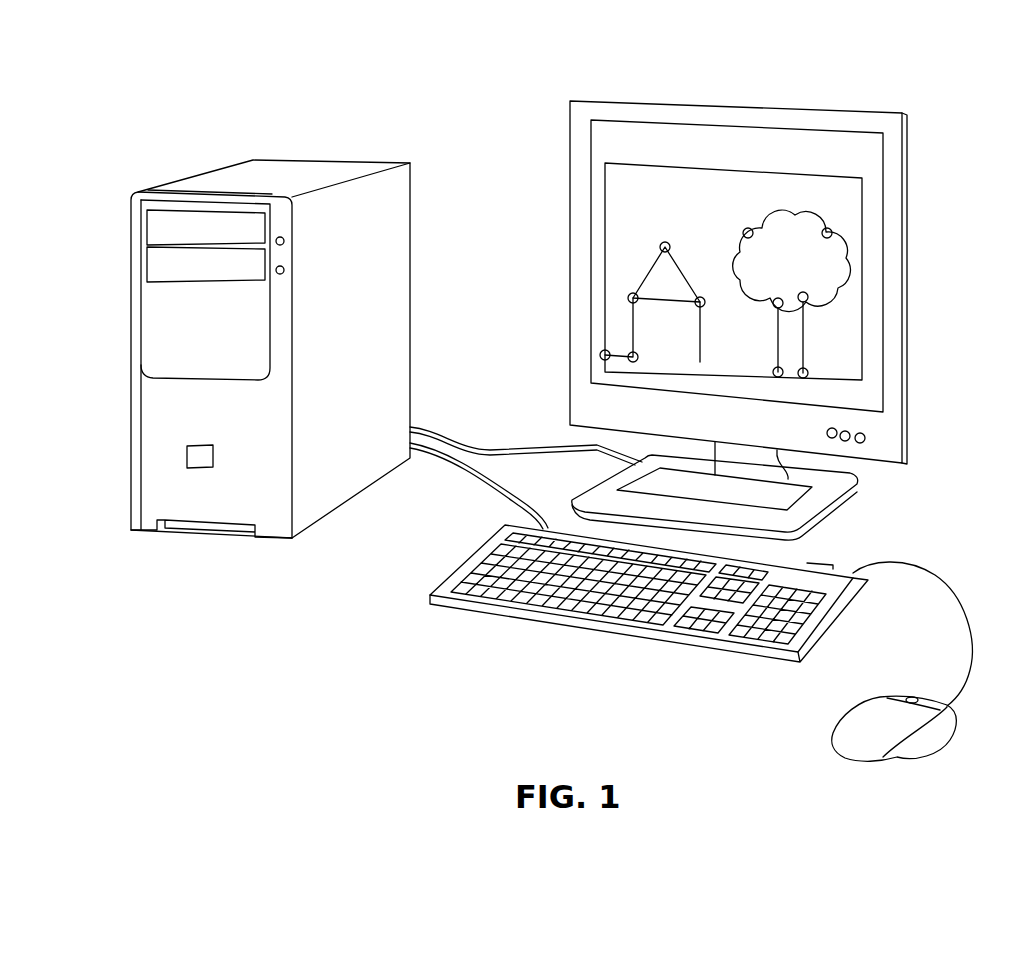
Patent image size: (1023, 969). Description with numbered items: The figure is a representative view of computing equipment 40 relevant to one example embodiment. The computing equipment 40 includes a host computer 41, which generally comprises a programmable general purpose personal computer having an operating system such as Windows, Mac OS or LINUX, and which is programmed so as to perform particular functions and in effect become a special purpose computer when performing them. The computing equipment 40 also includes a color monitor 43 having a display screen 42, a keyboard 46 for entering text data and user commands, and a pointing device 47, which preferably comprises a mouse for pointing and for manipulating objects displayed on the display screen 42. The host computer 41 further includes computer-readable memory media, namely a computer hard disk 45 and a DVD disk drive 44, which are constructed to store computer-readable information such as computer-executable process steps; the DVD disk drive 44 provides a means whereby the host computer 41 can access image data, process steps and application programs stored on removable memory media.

The computing equipment 40 is at (912, 79).
The host computer 41 is at (330, 162).
The display screen 42 is at (848, 312).
The color monitor 43 is at (778, 107).
The DVD disk drive 44 is at (147, 259).
The computer hard disk 45 is at (147, 226).
The keyboard 46 is at (622, 617).
The pointing device 47 is at (925, 735).